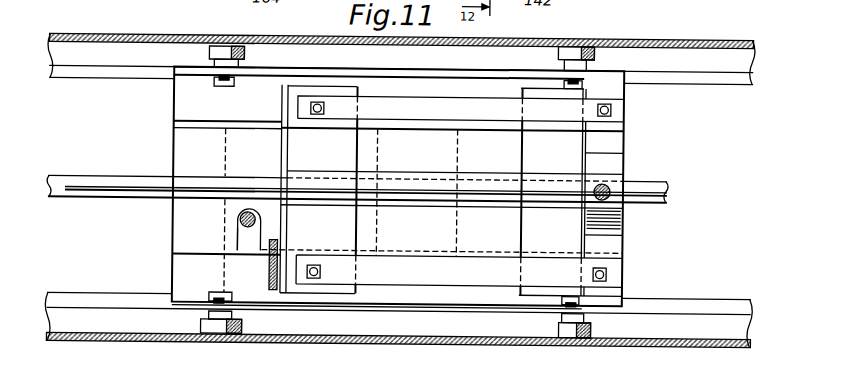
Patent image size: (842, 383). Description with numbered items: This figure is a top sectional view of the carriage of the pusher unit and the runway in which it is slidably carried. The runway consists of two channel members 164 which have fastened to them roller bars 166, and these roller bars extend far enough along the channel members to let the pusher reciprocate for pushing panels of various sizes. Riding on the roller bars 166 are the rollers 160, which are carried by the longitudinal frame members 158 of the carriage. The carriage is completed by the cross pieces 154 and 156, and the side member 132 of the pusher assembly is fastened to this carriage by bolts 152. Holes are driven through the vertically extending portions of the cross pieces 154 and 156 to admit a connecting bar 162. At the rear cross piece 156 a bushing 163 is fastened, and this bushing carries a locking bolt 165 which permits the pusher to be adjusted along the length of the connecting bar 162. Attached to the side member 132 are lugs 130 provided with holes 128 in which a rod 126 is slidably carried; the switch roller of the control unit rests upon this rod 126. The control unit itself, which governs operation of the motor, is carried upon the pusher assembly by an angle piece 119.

The angle piece 119 is at (268, 269).
The rod 126 is at (238, 212).
The holes 128 is at (240, 226).
The lugs 130 is at (242, 236).
The side member 132 is at (187, 132).
The bolts 152 is at (338, 234).
The cross piece 154 is at (290, 157).
The cross piece 156 is at (533, 150).
The longitudinal frame members 158 is at (177, 101).
The rollers 160 is at (203, 52).
The connecting bar 162 is at (107, 157).
The bushing 163 is at (617, 165).
The channel members 164 is at (695, 79).
The locking bolt 165 is at (609, 196).
The roller bars 166 is at (731, 50).